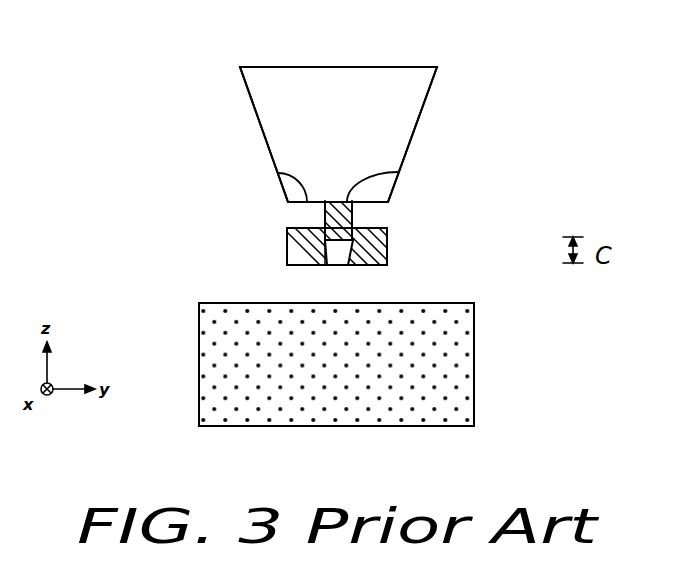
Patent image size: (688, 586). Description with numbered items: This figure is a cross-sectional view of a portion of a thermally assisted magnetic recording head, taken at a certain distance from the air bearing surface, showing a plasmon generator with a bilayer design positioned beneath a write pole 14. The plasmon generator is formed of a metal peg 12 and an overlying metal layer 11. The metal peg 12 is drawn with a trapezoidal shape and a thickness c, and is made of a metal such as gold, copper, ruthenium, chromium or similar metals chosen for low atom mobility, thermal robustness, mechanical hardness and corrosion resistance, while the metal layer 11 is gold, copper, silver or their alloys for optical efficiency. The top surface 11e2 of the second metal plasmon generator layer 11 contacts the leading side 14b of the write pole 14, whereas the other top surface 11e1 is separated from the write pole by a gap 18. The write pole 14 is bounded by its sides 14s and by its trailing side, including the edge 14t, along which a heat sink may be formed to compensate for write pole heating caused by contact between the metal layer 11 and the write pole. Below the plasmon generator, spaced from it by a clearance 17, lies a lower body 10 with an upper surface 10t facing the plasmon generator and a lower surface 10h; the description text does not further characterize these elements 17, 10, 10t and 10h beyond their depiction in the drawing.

The write pole 14 is at (260, 82).
The edge of trailing side of write pole 14t is at (383, 67).
The sides of write pole 14s is at (265, 140).
The leading side of write pole 14b is at (275, 173).
The gap 18 is at (307, 212).
The top surface of second metal PG layer 11e2 is at (393, 168).
The top surface of second metal PG layer 11e1 is at (300, 227).
The metal layer 11 is at (338, 228).
The metal peg 12 is at (340, 255).
The clearance space 17 is at (327, 293).
The substrate (WC) 10 is at (440, 377).
The top surface of substrate 10t is at (453, 303).
The bottom surface of substrate 10h is at (408, 427).